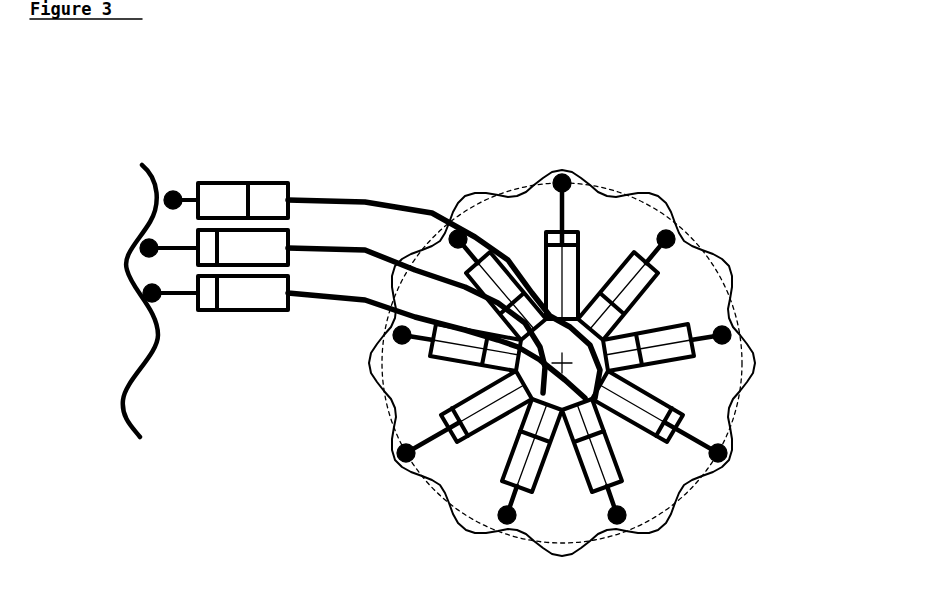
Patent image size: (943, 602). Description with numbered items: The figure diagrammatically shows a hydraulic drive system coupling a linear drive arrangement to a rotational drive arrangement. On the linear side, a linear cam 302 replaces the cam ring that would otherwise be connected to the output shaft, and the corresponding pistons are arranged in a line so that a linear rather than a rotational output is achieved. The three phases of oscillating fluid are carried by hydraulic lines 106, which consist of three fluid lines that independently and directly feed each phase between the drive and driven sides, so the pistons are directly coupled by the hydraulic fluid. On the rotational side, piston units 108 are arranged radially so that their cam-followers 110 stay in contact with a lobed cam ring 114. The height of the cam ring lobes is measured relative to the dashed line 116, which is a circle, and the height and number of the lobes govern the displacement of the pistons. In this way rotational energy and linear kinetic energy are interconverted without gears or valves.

The linear cam 302 is at (143, 167).
The hydraulic lines 106 is at (402, 211).
The dashed line 116 is at (700, 243).
The cam ring 114 is at (737, 307).
The piston units 108 is at (680, 402).
The cam-followers 110 is at (732, 453).